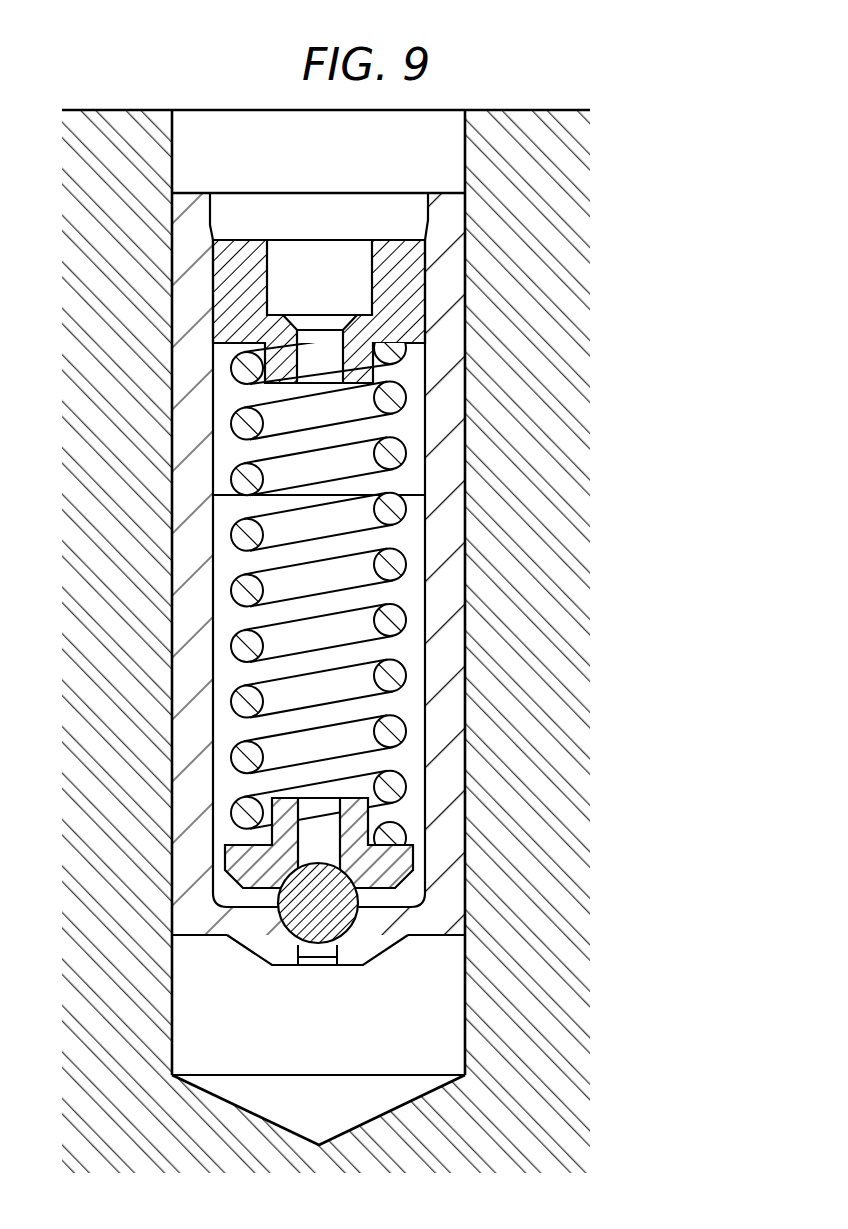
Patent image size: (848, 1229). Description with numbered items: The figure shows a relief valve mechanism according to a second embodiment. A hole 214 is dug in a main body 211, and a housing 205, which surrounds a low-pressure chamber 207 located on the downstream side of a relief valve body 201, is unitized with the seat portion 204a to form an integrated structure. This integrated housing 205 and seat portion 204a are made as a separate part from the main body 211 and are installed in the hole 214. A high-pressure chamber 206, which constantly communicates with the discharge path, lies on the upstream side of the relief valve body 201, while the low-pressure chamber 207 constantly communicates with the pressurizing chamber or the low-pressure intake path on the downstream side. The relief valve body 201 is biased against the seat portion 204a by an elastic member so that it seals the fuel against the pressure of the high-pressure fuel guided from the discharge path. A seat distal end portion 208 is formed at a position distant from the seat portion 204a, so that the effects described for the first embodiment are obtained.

The hole 214 is at (438, 172).
The main body 211 is at (508, 222).
The housing 205 is at (445, 290).
The low-pressure chamber 207 is at (413, 368).
The high-pressure chamber 206 is at (395, 452).
The relief valve body 201 is at (327, 903).
The seat portion 204a is at (335, 908).
The seat distal end portion 208 is at (325, 968).